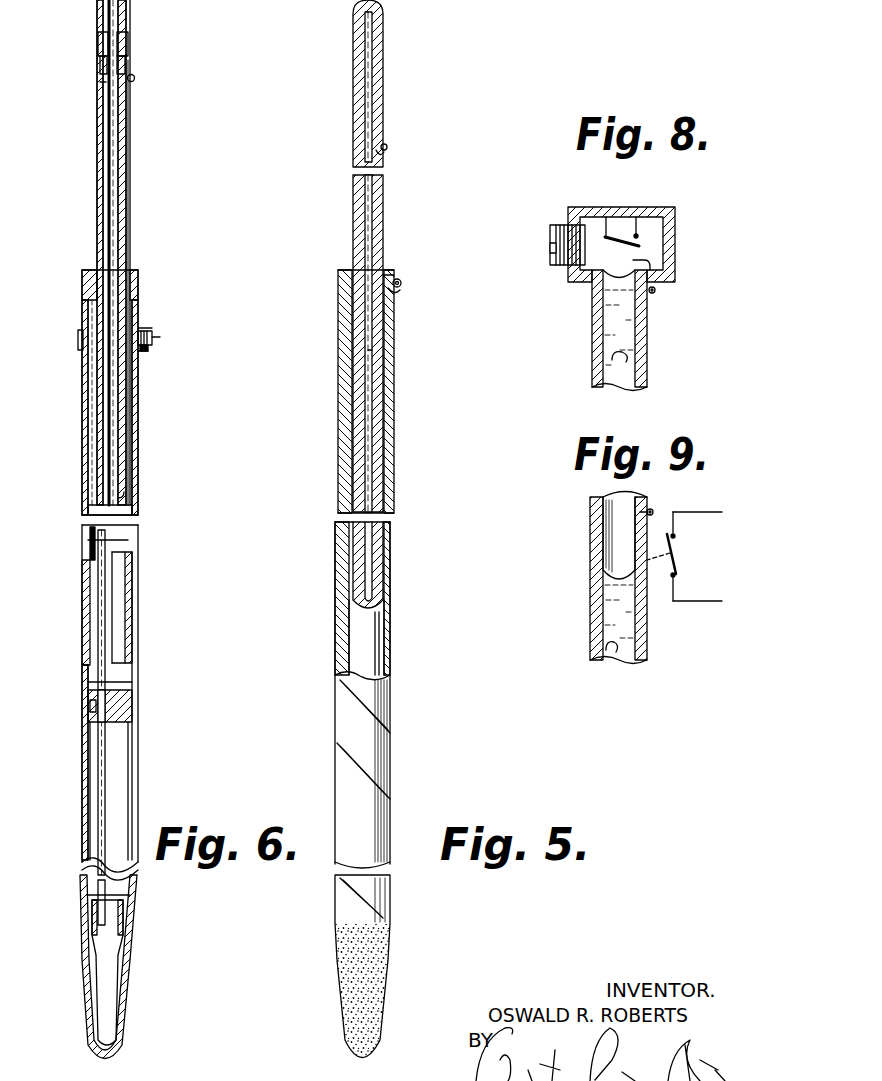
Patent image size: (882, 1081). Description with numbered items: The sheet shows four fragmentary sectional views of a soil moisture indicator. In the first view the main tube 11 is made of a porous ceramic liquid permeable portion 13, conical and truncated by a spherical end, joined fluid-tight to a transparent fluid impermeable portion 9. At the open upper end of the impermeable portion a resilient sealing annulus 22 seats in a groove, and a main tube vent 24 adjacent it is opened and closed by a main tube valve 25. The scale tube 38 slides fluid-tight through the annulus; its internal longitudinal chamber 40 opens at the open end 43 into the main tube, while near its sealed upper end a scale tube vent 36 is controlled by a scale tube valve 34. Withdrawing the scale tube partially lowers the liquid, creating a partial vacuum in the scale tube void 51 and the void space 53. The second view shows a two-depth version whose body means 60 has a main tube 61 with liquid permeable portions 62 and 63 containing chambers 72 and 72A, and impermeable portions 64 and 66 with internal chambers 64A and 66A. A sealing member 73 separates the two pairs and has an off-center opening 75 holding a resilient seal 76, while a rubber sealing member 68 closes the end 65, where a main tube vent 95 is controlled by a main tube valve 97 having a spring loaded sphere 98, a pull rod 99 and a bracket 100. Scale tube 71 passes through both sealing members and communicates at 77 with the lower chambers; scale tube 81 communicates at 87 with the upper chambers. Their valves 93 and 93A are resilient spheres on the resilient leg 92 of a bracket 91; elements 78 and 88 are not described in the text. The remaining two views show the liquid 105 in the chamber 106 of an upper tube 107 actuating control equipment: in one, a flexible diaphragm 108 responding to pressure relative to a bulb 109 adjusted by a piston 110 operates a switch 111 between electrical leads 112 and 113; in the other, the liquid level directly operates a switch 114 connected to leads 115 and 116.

In FIG. 5, the fluid impermeable portion 9 is at (388, 656).
In FIG. 5, the main tube 11 is at (372, 748).
In FIG. 5, the liquid permeable portion 13 is at (365, 989).
In FIG. 5, the sealing annulus 22 is at (392, 276).
In FIG. 5, the main tube vent 24 is at (396, 292).
In FIG. 5, the main tube valve 25 is at (401, 283).
In FIG. 5, the scale tube valve 34 is at (386, 145).
In FIG. 5, the scale tube vent 36 is at (384, 153).
In FIG. 5, the scale tube 38 is at (351, 208).
In FIG. 5, the internal longitudinal chamber 40 is at (368, 352).
In FIG. 5, the open end 43 is at (373, 616).
In FIG. 5, the scale tube void 51 is at (372, 69).
In FIG. 5, the void space 53 is at (346, 301).
In FIG. 6, the body means 60 is at (80, 388).
In FIG. 6, the main tube 61 is at (80, 552).
In FIG. 6, the liquid permeable portion 62 is at (82, 1000).
In FIG. 6, the liquid permeable portion 63 is at (132, 614).
In FIG. 6, the impermeable portion 64 is at (82, 790).
In FIG. 6, the internal chamber 64A is at (128, 784).
In FIG. 6, the end 65 is at (78, 340).
In FIG. 6, the impermeable portion 66 is at (138, 447).
In FIG. 6, the internal chamber 66A is at (132, 511).
In FIG. 6, the sealing member 68 is at (138, 282).
In FIG. 6, the scale tube 71 is at (98, 183).
In FIG. 6, the chamber 72 is at (116, 968).
In FIG. 6, the chamber 72A is at (106, 580).
In FIG. 6, the sealing member 73 is at (132, 710).
In FIG. 6, the off-center opening 75 is at (88, 694).
In FIG. 6, the resilient seal 76 is at (90, 708).
In FIG. 6, the communication point 77 is at (82, 862).
In FIG. 6, the rod 78 is at (105, 117).
In FIG. 6, the scale tube 81 is at (130, 183).
In FIG. 6, the communication point 87 is at (124, 498).
In FIG. 6, the wire 88 is at (128, 118).
In FIG. 6, the bracket 91 is at (98, 44).
In FIG. 6, the resilient leg 92 is at (100, 70).
In FIG. 6, the valve 93 is at (134, 80).
In FIG. 6, the valve 93A is at (98, 84).
In FIG. 6, the main tube vent 95 is at (146, 328).
In FIG. 6, the main tube valve 97 is at (148, 348).
In FIG. 6, the spring loaded sphere 98 is at (138, 352).
In FIG. 6, the pull rod 99 is at (152, 338).
In FIG. 6, the bracket 100 is at (160, 337).
In FIG. 8, the liquid 105 is at (615, 338).
In FIG. 9, the liquid 105 is at (625, 634).
In FIG. 8, the chamber 106 is at (626, 362).
In FIG. 9, the chamber 106 is at (616, 652).
In FIG. 8, the upper tube 107 is at (592, 346).
In FIG. 9, the upper tube 107 is at (590, 600).
In FIG. 8, the flexible diaphragm 108 is at (650, 262).
In FIG. 8, the bulb 109 is at (675, 222).
In FIG. 8, the piston 110 is at (550, 233).
In FIG. 8, the switch 111 is at (614, 238).
In FIG. 8, the electrical lead 112 is at (606, 217).
In FIG. 8, the electrical lead 113 is at (636, 217).
In FIG. 9, the switch 114 is at (676, 548).
In FIG. 9, the lead 115 is at (722, 512).
In FIG. 9, the lead 116 is at (704, 601).